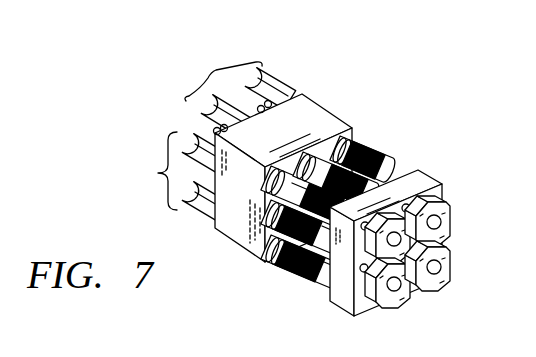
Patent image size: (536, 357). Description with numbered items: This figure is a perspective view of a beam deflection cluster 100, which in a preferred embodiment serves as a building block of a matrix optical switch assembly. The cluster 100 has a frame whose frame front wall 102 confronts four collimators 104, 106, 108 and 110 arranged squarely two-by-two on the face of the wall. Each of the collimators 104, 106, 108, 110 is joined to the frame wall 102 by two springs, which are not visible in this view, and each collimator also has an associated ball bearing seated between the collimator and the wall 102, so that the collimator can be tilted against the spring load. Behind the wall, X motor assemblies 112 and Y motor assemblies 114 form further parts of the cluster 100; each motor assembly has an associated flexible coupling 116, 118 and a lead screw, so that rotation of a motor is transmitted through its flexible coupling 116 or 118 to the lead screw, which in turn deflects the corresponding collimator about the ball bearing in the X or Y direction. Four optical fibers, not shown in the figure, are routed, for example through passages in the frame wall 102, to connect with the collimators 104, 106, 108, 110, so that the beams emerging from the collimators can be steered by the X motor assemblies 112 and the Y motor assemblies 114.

The beam deflection cluster 100 is at (333, 107).
The frame front wall 102 is at (424, 171).
The collimator 104 is at (350, 271).
The collimator 106 is at (392, 308).
The collimator 108 is at (448, 284).
The collimator 110 is at (452, 222).
The X motor assemblies 112 is at (232, 81).
The Y motor assemblies 114 is at (176, 177).
The flexible coupling 116 is at (371, 150).
The flexible coupling 118 is at (299, 272).